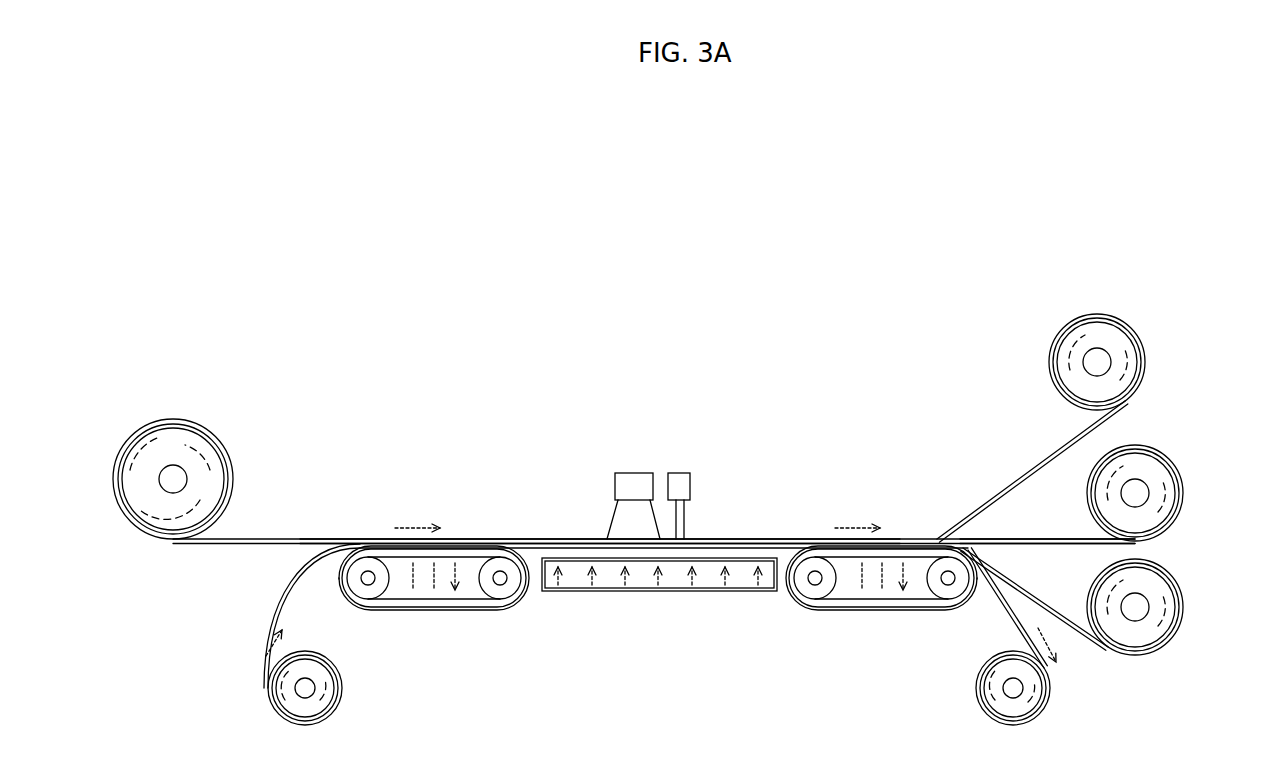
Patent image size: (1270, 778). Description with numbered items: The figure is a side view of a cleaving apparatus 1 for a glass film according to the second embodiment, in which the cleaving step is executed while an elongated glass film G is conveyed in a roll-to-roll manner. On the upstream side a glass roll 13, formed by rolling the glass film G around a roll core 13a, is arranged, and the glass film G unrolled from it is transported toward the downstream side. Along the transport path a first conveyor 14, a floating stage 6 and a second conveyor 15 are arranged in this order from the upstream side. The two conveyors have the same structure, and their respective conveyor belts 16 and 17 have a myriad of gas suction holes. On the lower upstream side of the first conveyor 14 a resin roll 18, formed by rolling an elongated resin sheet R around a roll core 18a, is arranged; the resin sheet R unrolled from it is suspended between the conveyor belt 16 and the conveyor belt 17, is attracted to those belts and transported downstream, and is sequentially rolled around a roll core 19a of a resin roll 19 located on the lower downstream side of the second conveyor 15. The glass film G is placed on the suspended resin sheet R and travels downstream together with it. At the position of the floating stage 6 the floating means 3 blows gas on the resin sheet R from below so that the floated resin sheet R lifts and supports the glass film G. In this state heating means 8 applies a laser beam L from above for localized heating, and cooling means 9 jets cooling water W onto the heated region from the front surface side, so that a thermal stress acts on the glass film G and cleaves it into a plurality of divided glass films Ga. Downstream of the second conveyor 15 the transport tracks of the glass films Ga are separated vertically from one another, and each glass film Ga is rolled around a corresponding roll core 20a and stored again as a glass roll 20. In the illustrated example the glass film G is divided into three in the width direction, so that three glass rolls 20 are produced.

The cleaving apparatus 1 is at (783, 396).
The floating means 3 is at (638, 600).
The floating stage 6 is at (710, 584).
The heating means 8 is at (633, 480).
The cooling means 9 is at (681, 480).
The glass roll 13 is at (209, 410).
The roll core 13a is at (177, 496).
The first conveyor 14 is at (440, 613).
The second conveyor 15 is at (884, 615).
The conveyor belt 16 is at (470, 548).
The conveyor belt 17 is at (896, 538).
The resin roll 18 is at (276, 733).
The roll core 18a is at (318, 690).
The resin roll 19 is at (986, 729).
The roll core 19a is at (1040, 690).
The glass roll 20 is at (1151, 336).
The roll core 20a is at (1101, 366).
The glass film G is at (291, 537).
The divided glass film Ga is at (1020, 478).
The resin sheet R is at (304, 609).
The cooling water W is at (614, 521).
The laser beam L is at (690, 522).